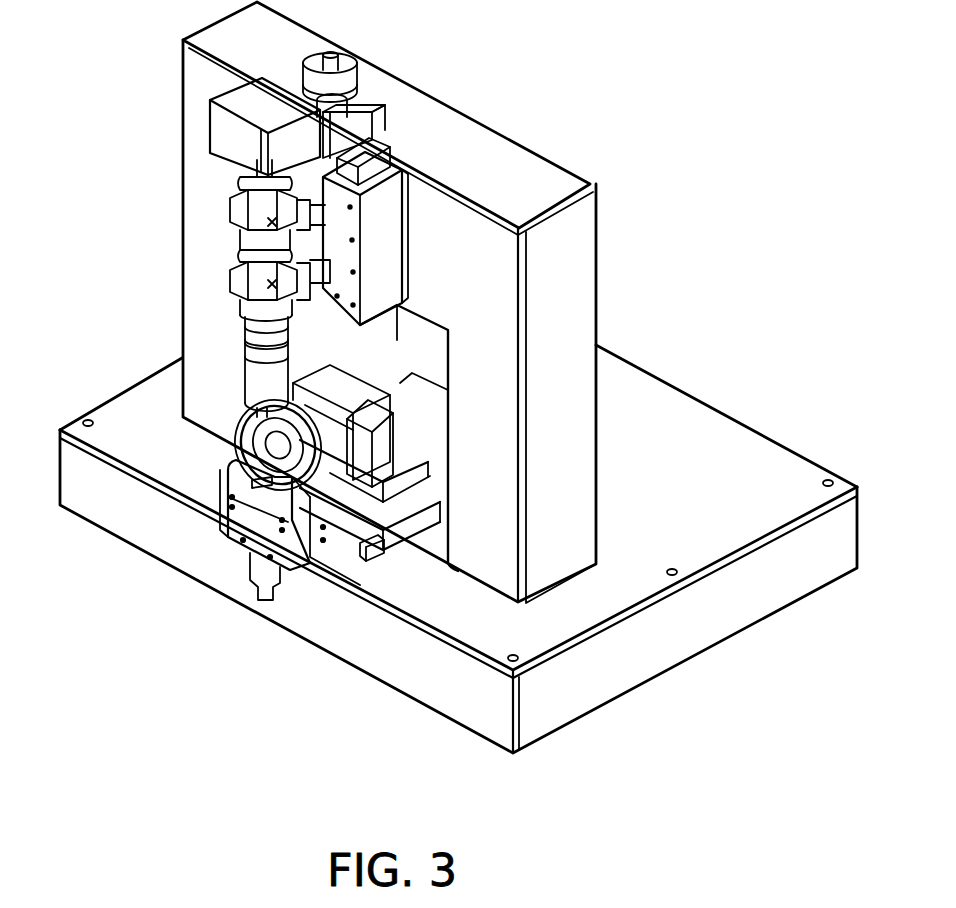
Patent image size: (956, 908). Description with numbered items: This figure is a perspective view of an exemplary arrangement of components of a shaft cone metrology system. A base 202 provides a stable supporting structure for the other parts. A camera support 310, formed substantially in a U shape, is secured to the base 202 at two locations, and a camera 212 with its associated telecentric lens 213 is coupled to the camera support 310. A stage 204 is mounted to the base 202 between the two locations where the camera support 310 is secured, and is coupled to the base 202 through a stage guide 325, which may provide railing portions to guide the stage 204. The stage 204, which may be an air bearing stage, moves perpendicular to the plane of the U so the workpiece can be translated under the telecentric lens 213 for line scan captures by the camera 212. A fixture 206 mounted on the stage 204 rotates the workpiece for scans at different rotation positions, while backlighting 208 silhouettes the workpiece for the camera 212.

The base 202 is at (108, 493).
The stage 204 is at (398, 522).
The fixture 206 is at (282, 442).
The backlighting 208 is at (227, 497).
The camera 212 is at (228, 155).
The telecentric lens 213 is at (246, 388).
The camera support 310 is at (590, 183).
The stage guide 325 is at (364, 548).